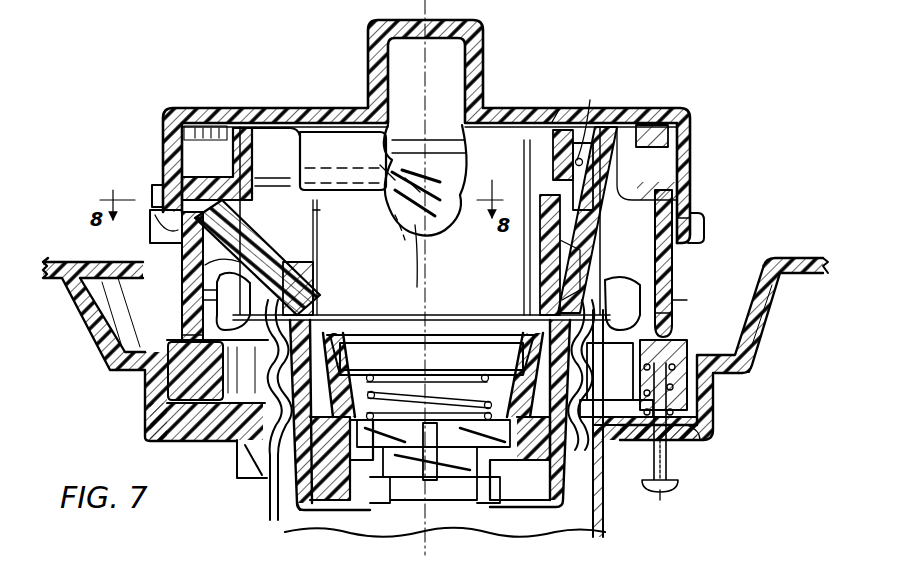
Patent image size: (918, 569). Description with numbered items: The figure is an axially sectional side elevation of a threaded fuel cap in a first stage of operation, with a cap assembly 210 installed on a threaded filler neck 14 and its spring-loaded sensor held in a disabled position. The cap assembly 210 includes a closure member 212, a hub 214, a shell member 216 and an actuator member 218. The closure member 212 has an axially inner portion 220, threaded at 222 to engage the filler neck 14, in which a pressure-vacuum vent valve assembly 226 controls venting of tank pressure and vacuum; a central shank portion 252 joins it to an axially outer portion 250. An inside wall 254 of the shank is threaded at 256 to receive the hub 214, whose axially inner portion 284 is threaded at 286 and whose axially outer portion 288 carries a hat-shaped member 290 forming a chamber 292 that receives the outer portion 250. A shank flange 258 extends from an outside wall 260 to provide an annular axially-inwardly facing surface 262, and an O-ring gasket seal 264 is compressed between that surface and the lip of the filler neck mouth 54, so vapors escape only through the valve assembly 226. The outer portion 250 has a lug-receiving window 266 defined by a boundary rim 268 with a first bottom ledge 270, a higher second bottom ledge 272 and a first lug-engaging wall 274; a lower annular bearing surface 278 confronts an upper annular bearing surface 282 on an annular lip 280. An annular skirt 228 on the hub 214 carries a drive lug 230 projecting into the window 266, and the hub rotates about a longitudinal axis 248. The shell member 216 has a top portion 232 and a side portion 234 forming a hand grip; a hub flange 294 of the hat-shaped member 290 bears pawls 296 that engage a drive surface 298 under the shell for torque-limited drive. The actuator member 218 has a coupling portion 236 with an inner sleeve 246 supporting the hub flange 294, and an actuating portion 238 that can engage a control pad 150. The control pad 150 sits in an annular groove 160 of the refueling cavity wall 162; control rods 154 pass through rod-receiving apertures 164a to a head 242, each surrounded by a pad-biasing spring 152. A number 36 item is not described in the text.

The filler neck 14 is at (605, 500).
The spring clip 36 is at (218, 308).
The mouth 54 is at (700, 270).
The control pad 150 is at (187, 389).
The pad-biasing spring 152 is at (690, 389).
The control rod 154 is at (672, 474).
The annular groove 160 is at (700, 443).
The refueling cavity wall 162 is at (770, 298).
The rod-receiving aperture 164a is at (667, 468).
The cap assembly 210 is at (707, 52).
The closure member 212 is at (296, 508).
The hub 214 is at (318, 262).
The shell member 216 is at (684, 110).
The actuator member 218 is at (728, 299).
The axially inner portion 220 is at (582, 525).
The threads 222 is at (583, 386).
The pressure-vacuum vent valve assembly 226 is at (518, 486).
The annular skirt 228 is at (598, 208).
The drive lug 230 is at (421, 348).
The top portion 232 is at (556, 114).
The side portion 234 is at (705, 210).
The coupling portion 236 is at (708, 218).
The actuating portion 238 is at (195, 335).
The head 242 is at (663, 490).
The inner sleeve 246 is at (188, 162).
The longitudinal axis 248 is at (428, 12).
The axially outer portion 250 is at (598, 130).
The central shank portion 252 is at (615, 300).
The inside wall 254 is at (312, 302).
The threads 256 is at (312, 280).
The shank flange 258 is at (228, 231).
The outside wall 260 is at (185, 376).
The annular axially-inwardly facing surface 262 is at (210, 262).
The O-ring gasket seal 264 is at (205, 297).
The lug-receiving window 266 is at (428, 192).
The boundary rim 268 is at (386, 160).
The first bottom ledge 270 is at (413, 170).
The second bottom ledge 272 is at (393, 235).
The first lug-engaging wall 274 is at (439, 256).
The lower annular bearing surface 278 is at (595, 160).
The annular lip 280 is at (305, 120).
The upper annular bearing surface 282 is at (300, 164).
The axially inner portion 284 is at (545, 296).
The threads 286 is at (545, 268).
The axially outer portion 288 is at (560, 145).
The hat-shaped member 290 is at (232, 152).
The chamber 292 is at (262, 184).
The hub flange 294 is at (668, 188).
The pawls 296 is at (662, 145).
The drive surface 298 is at (225, 163).